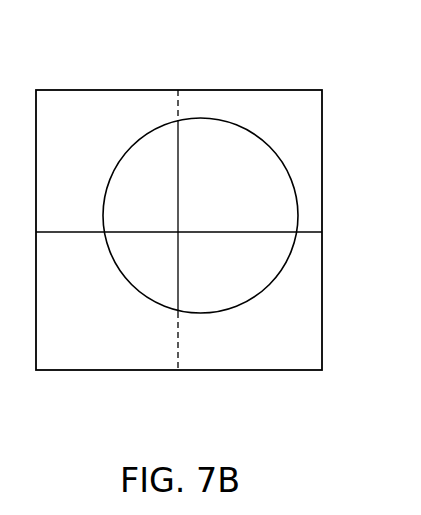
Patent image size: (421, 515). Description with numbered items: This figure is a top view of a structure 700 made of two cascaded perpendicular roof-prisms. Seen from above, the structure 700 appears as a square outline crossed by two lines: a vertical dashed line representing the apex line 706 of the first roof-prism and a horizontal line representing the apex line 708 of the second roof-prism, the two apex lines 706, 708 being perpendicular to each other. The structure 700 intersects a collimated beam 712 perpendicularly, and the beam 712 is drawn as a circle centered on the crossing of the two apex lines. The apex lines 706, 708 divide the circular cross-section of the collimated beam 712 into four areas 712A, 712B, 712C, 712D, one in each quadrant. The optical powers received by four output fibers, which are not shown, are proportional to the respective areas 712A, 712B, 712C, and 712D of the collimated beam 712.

The structure 700 is at (102, 46).
The apex line 706 is at (178, 90).
The apex line 708 is at (322, 232).
The collimated beam 712 is at (275, 148).
The area of collimated beam 712A is at (142, 212).
The area of collimated beam 712B is at (233, 193).
The area of collimated beam 712C is at (233, 265).
The area of collimated beam 712D is at (147, 252).